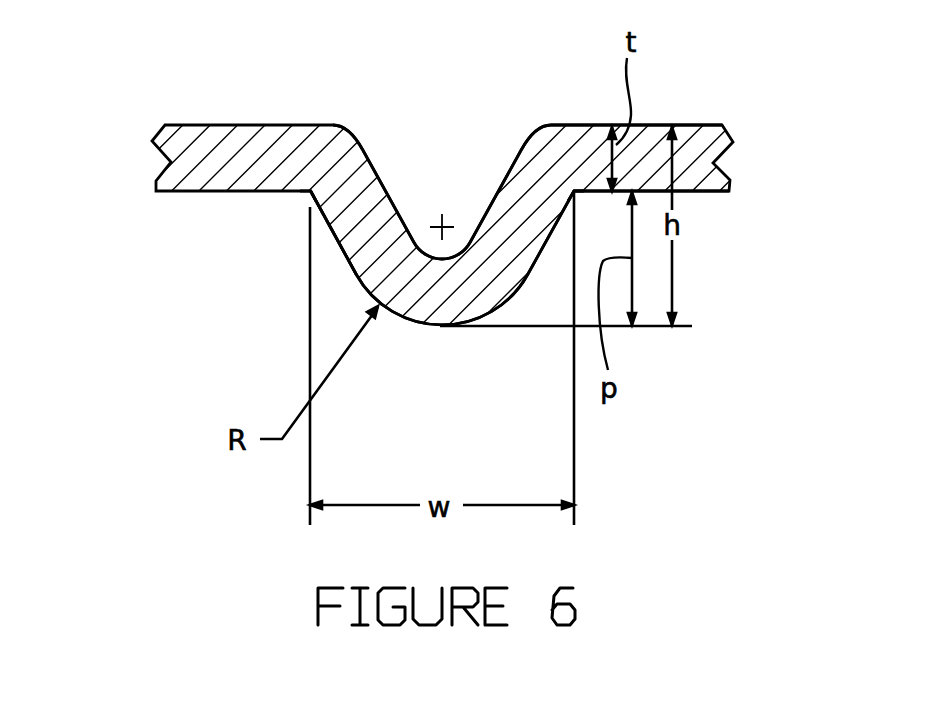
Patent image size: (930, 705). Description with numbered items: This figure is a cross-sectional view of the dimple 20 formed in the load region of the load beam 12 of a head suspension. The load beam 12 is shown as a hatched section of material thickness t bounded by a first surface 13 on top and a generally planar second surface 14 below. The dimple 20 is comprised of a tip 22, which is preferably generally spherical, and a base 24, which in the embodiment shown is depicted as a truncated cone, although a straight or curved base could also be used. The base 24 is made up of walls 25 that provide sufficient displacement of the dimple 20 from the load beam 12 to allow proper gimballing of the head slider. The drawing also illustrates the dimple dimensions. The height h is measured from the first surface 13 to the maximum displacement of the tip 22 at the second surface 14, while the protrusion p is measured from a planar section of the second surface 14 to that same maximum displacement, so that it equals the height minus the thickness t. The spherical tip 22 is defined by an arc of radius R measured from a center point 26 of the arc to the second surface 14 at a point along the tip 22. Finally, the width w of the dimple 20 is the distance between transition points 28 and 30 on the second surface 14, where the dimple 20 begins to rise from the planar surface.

The load beam 12 is at (175, 150).
The first surface 13 is at (692, 125).
The second surface 14 is at (712, 192).
The dimple 20 is at (411, 293).
The tip 22 is at (438, 327).
The base 24 is at (353, 215).
The walls 25 is at (388, 182).
The center point 26 is at (444, 224).
The transition point 28 is at (313, 196).
The transition point 30 is at (573, 195).